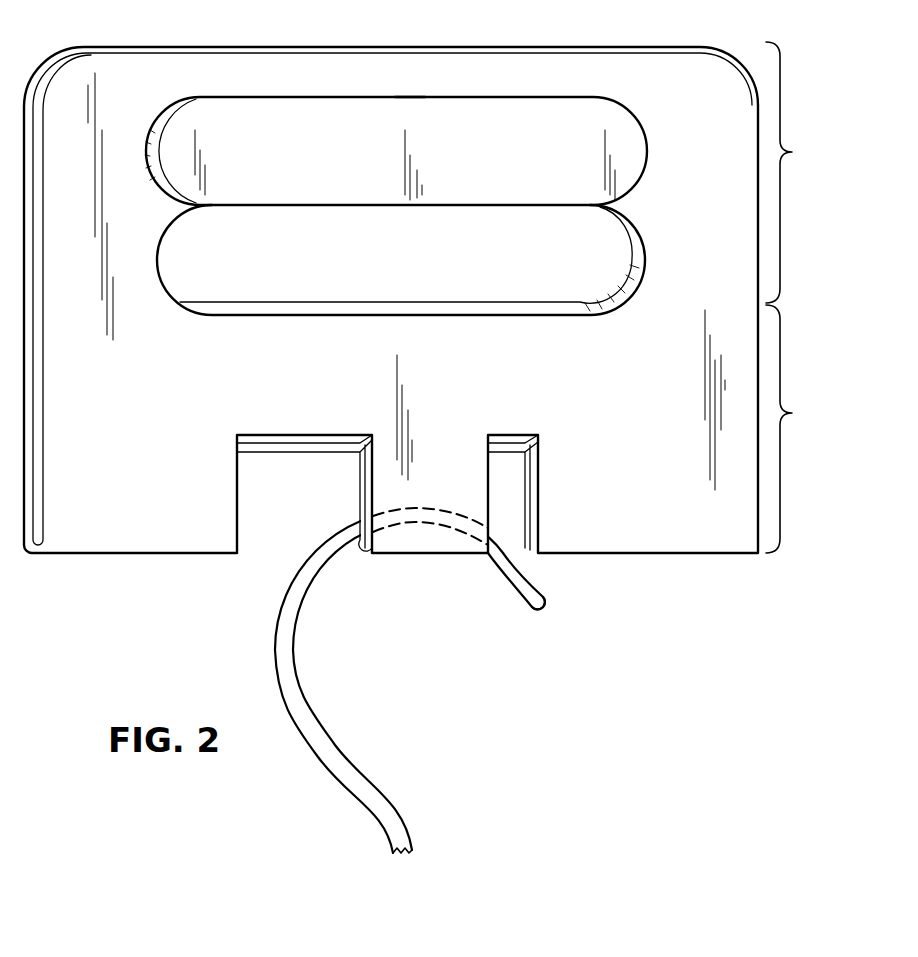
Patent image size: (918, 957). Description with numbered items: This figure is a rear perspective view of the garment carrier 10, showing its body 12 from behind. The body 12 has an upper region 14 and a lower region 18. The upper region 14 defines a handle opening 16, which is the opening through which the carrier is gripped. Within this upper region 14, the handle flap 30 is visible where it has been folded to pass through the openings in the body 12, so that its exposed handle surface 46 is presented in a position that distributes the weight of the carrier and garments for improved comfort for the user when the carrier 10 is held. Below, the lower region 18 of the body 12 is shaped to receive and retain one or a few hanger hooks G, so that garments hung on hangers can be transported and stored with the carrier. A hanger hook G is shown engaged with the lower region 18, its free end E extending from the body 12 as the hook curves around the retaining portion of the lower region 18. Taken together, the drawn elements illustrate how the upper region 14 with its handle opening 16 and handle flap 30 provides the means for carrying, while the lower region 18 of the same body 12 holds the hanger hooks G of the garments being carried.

The garment carrier 10 is at (428, 430).
The body 12 is at (639, 392).
The upper region 14 is at (799, 172).
The handle opening 16 is at (401, 270).
The lower region 18 is at (798, 429).
The handle flap 30 is at (410, 107).
The exposed handle surface 46 is at (554, 173).
The strap end E is at (545, 601).
The hanger hooks G is at (325, 733).